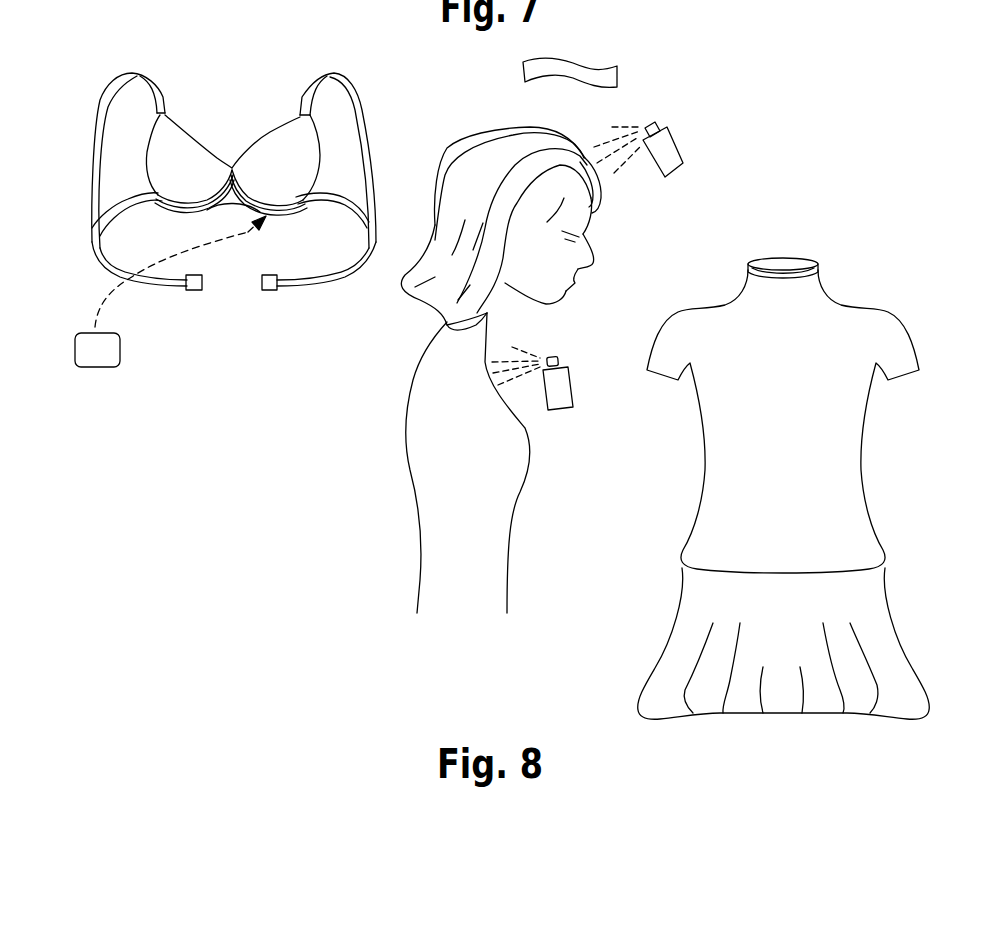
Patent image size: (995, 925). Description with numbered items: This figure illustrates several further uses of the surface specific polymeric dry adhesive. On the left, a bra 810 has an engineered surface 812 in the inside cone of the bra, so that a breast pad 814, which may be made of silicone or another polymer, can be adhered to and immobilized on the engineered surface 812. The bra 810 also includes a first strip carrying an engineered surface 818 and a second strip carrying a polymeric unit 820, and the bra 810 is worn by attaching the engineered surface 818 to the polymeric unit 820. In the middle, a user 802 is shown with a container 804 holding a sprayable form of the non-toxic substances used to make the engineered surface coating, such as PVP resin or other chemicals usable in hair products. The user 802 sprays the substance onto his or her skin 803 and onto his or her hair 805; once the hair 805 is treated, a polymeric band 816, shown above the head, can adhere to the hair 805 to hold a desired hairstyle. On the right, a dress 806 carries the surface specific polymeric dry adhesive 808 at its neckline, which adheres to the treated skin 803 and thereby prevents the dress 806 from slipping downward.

The user 802 is at (558, 263).
The skin 803 is at (468, 406).
The container 804 is at (677, 137).
The hair 805 is at (485, 128).
The dress 806 is at (807, 440).
The surface specific polymeric dry adhesive 808 is at (790, 257).
The bra 810 is at (182, 48).
The engineered surface 812 is at (300, 180).
The breast pad 814 is at (120, 350).
The polymeric band 816 is at (572, 60).
The engineered surface 818 is at (198, 291).
The polymeric unit 820 is at (272, 291).